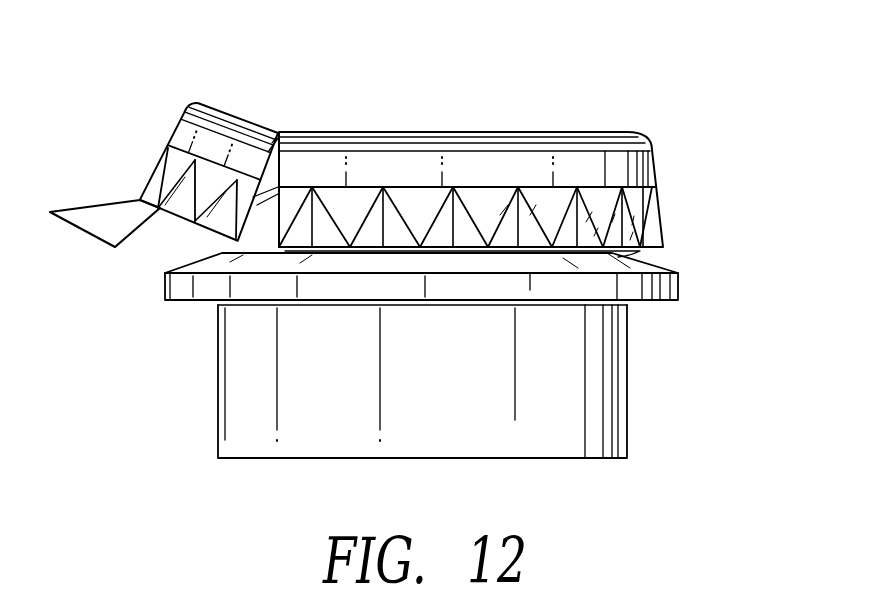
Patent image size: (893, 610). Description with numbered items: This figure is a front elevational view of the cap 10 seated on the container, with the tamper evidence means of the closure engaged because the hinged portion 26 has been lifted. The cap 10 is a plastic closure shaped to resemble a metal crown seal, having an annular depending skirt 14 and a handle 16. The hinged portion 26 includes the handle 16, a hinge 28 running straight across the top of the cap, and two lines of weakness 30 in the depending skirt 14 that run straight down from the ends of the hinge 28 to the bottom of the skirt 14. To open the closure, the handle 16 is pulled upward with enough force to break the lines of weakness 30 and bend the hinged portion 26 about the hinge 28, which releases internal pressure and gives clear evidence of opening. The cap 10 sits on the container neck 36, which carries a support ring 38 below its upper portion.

The cap 10 is at (692, 202).
The annular depending skirt 14 is at (215, 120).
The handle 16 is at (98, 205).
The hinged portion 26 is at (215, 106).
The hinge 28 is at (279, 133).
The lines of weakness 30 is at (281, 163).
The container neck 36 is at (630, 374).
The support ring 38 is at (682, 282).